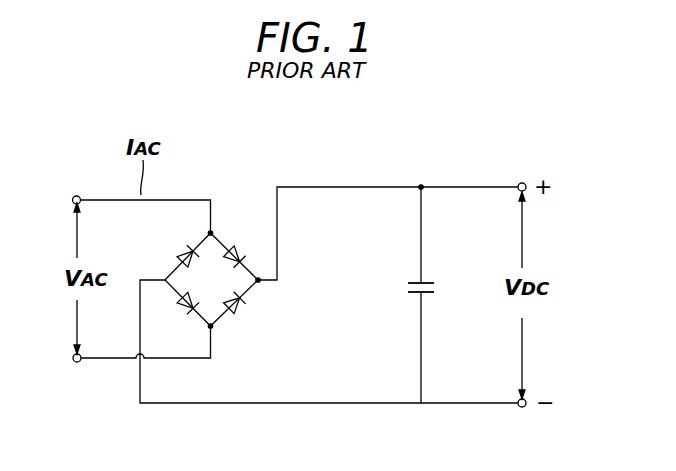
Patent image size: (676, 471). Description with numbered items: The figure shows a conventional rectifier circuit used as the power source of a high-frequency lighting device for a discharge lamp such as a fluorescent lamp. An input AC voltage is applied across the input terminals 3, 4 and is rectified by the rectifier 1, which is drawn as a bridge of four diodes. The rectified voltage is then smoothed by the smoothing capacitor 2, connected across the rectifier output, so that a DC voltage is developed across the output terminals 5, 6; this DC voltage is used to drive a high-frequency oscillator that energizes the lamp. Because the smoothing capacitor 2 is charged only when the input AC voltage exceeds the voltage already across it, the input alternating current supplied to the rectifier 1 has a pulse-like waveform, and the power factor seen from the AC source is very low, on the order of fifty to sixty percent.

The rectifier 1 is at (216, 282).
The smoothing capacitor 2 is at (408, 299).
The input terminal 3 is at (76, 196).
The input terminal 4 is at (77, 362).
The output terminal 5 is at (522, 183).
The output terminal 6 is at (523, 408).